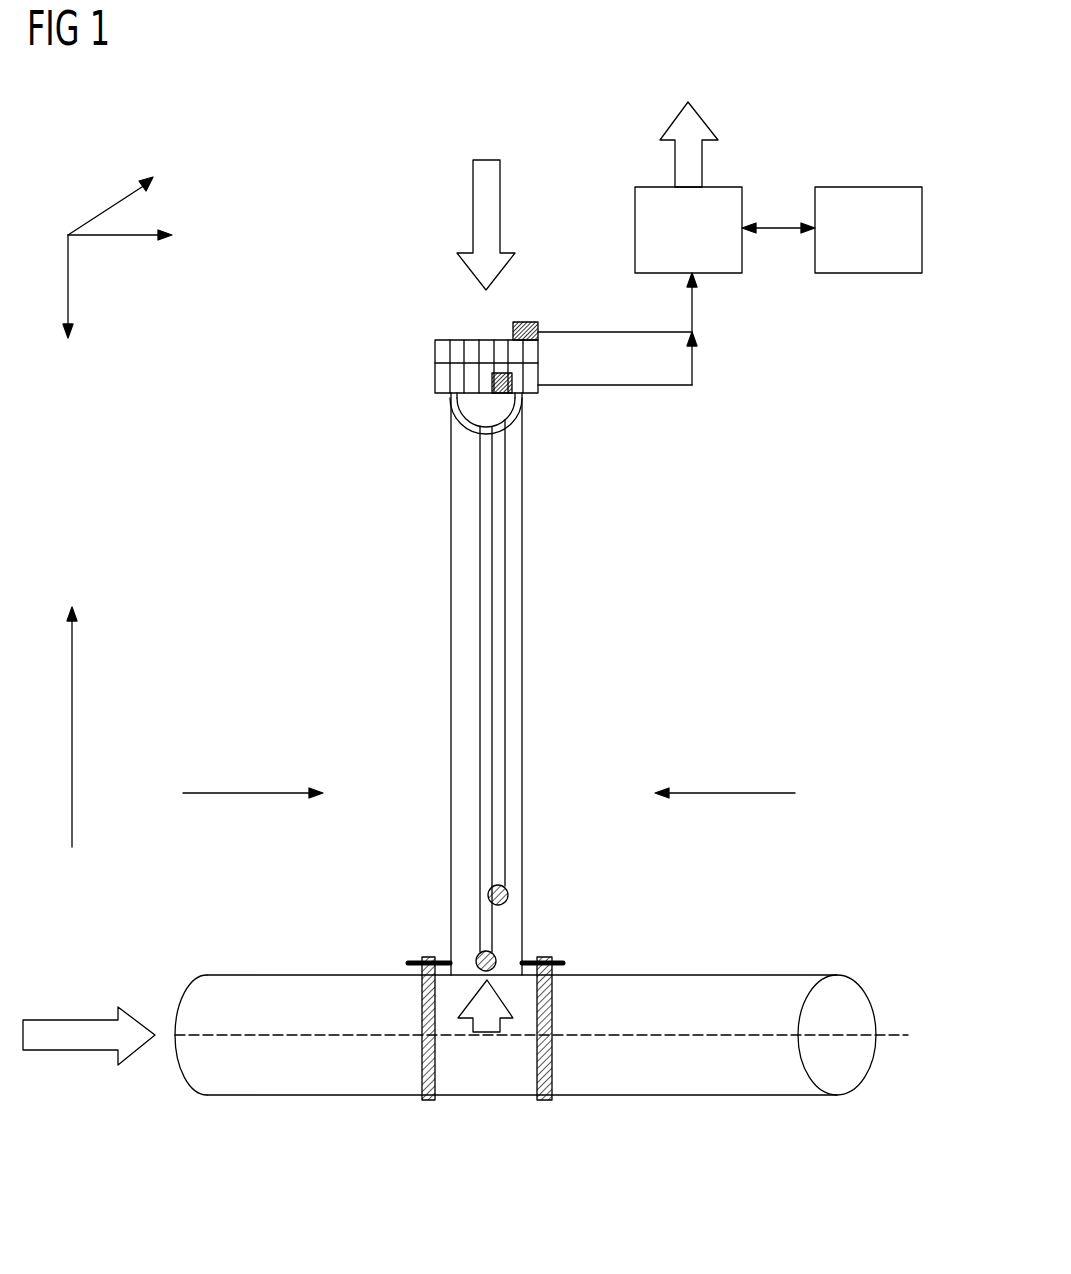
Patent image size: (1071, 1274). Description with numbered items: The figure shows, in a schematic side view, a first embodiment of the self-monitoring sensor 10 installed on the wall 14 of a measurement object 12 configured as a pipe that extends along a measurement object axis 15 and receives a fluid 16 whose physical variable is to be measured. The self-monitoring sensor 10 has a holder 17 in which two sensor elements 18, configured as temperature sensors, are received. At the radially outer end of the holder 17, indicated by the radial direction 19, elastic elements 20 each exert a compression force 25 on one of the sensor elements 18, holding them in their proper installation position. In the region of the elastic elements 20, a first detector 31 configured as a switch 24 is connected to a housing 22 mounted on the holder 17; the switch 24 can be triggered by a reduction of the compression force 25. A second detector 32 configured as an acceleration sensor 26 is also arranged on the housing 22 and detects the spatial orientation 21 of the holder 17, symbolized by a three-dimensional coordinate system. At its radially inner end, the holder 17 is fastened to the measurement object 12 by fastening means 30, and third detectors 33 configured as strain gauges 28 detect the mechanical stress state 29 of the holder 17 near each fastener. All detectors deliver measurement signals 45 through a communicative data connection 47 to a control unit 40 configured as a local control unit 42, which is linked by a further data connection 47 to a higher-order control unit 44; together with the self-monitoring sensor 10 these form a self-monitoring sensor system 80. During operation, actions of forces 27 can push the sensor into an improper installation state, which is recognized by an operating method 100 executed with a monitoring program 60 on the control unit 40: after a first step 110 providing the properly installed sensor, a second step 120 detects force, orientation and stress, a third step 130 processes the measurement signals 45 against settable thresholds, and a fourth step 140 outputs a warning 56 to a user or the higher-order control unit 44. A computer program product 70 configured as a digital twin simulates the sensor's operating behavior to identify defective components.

The computer program product 70 is at (472, 622).
The self-monitoring sensor system 80 is at (472, 622).
The operating method 100 is at (158, 107).
The spatial orientation 21 is at (124, 257).
The second step 120 is at (68, 280).
The compression force 25 is at (500, 200).
The elastic elements 20 is at (454, 334).
The housing 22 is at (435, 367).
The acceleration sensor 26 is at (549, 297).
The second detector 32 is at (528, 322).
The switch 24 is at (547, 422).
The first detector 31 is at (513, 385).
The measurement signals 45 is at (660, 332).
The communicative data connection 47 is at (753, 201).
The third step 130 is at (713, 285).
The control unit 40 is at (713, 198).
The local control unit 42 is at (623, 198).
The monitoring program 60 is at (655, 152).
The higher-order control unit 44 is at (868, 187).
The warning 56 is at (753, 201).
The fourth step 140 is at (782, 228).
The self-monitoring sensor 10 is at (512, 684).
The first step 110 is at (512, 684).
The holder 17 is at (451, 545).
The sensor elements 18 is at (480, 615).
The measurement object 12 is at (541, 1071).
The wall 14 is at (541, 1071).
The measurement object axis 15 is at (893, 1035).
The fastening means 30 is at (428, 1100).
The strain gauges 28 is at (487, 932).
The mechanical stress state 29 is at (487, 932).
The third detectors 33 is at (415, 957).
The fluid 16 is at (65, 1020).
The radial direction 19 is at (72, 710).
The actions of forces 27 is at (248, 793).